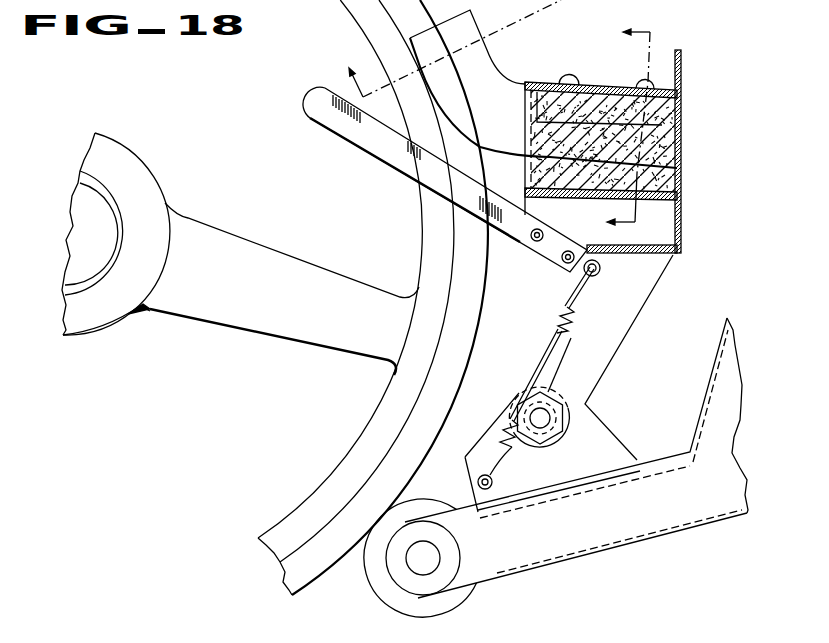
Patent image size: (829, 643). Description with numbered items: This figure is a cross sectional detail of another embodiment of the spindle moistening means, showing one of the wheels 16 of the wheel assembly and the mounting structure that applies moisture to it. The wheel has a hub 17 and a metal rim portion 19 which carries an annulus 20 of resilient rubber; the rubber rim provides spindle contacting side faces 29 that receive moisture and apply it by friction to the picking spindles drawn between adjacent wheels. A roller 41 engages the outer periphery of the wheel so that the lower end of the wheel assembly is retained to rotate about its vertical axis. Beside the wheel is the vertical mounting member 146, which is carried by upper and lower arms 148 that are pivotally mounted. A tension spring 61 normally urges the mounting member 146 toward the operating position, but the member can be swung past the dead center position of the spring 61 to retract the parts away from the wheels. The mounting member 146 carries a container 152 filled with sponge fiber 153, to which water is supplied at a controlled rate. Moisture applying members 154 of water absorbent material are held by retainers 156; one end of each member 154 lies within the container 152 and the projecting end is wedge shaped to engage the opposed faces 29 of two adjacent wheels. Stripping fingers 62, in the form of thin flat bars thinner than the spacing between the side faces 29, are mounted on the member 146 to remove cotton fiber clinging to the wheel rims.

The wheel 16 is at (371, 420).
The hub 17 is at (150, 197).
The metal portion of the wheel rim 19 is at (332, 460).
The annulus 20 is at (447, 48).
The spindle contacting side faces 29 is at (473, 277).
The roller 41 is at (428, 505).
The tension spring 61 is at (560, 305).
The stripping fingers 62 is at (362, 137).
The vertical mounting member 146 is at (667, 223).
The arms 148 is at (625, 328).
The container 152 is at (682, 135).
The sponge fiber 153 is at (673, 173).
The moisture applying members 154 is at (502, 78).
The retainers 156 is at (595, 103).